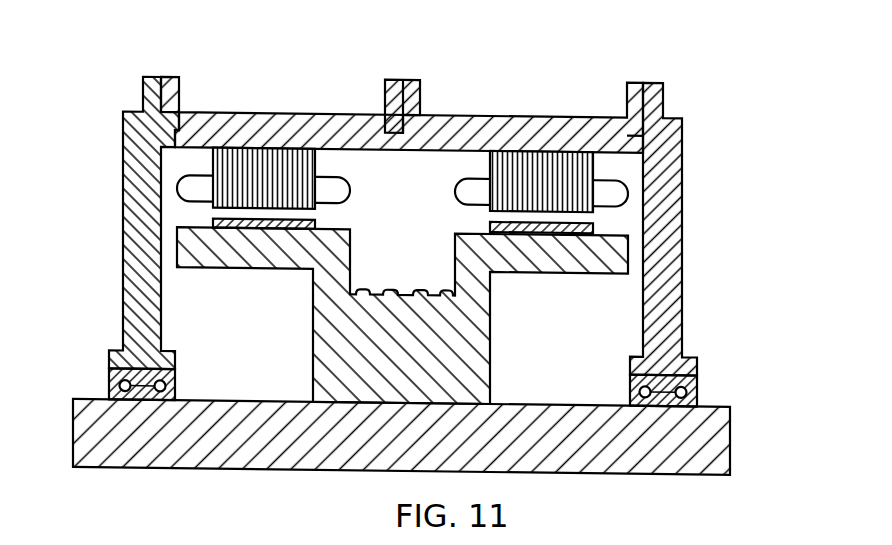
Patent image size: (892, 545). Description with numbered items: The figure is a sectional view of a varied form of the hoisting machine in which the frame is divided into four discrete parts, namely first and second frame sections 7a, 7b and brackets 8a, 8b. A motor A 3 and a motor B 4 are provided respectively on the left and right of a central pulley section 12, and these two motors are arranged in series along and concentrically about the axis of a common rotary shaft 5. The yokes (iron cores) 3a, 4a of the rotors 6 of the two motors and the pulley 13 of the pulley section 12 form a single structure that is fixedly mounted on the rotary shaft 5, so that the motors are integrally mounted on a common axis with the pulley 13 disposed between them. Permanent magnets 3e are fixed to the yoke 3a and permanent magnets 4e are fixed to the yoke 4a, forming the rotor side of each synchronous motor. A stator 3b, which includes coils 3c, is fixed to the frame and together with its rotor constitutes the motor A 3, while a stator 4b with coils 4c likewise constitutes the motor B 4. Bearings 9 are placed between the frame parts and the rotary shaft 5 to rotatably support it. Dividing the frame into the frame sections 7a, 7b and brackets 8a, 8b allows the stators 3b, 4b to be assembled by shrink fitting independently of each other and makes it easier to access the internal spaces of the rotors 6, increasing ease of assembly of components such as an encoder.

The motor A 3 is at (357, 54).
The motor B 4 is at (627, 54).
The pulley section 12 is at (447, 54).
The yoke 3a is at (402, 308).
The stator 3b is at (315, 160).
The coil 3c is at (350, 186).
The permanent magnet 3e is at (315, 220).
The yoke 4a is at (402, 308).
The stator 4b is at (490, 165).
The coil 4c is at (455, 186).
The permanent magnet 4e is at (490, 220).
The rotary shaft 5 is at (678, 447).
The rotor 6 is at (457, 308).
The first frame section 7a is at (283, 110).
The second frame section 7b is at (531, 110).
The bracket 8a is at (123, 226).
The bracket 8b is at (682, 189).
The bearing 9 is at (109, 377).
The pulley 13 is at (408, 285).